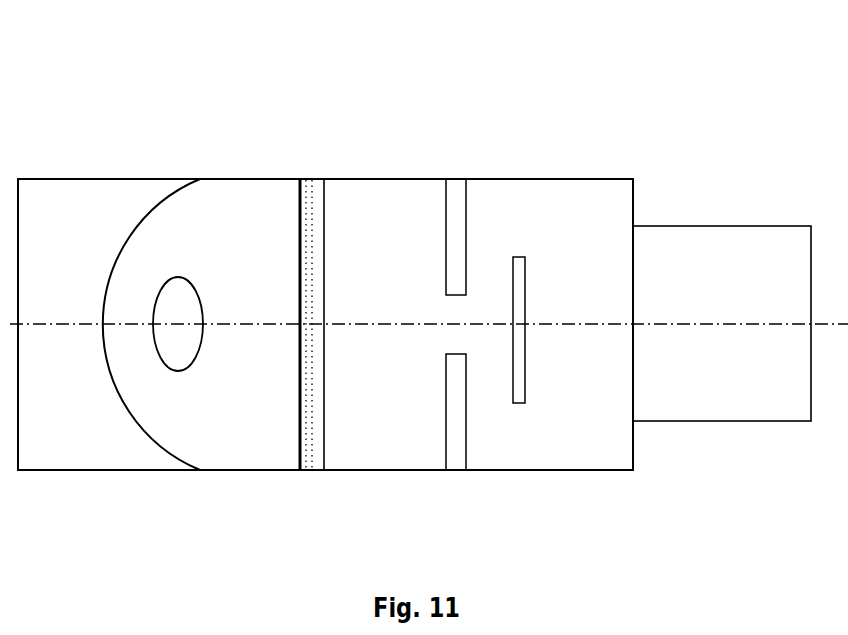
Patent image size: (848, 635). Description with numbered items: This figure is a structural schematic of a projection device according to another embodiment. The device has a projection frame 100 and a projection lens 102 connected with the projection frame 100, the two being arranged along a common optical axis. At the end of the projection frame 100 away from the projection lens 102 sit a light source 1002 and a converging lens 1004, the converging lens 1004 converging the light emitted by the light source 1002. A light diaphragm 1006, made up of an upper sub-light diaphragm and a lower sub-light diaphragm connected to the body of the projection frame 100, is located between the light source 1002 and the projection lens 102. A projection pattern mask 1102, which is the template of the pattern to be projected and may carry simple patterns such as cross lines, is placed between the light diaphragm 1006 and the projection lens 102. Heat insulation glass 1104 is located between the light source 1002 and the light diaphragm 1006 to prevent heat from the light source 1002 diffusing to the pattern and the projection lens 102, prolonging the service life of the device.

The projection frame 100 is at (325, 324).
The projection lens 102 is at (722, 323).
The light source 1002 is at (348, 202).
The converging lens 1004 is at (222, 252).
The light diaphragm 1006 is at (591, 252).
The projection pattern mask 1102 is at (472, 407).
The heat insulation glass 1104 is at (177, 368).